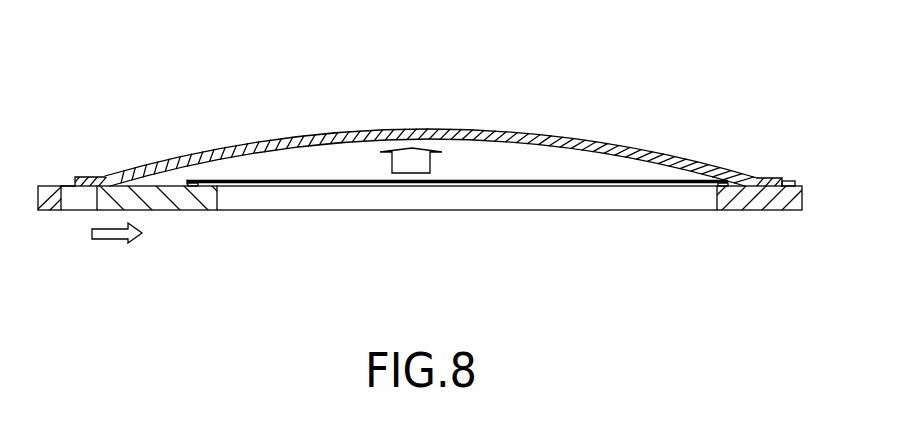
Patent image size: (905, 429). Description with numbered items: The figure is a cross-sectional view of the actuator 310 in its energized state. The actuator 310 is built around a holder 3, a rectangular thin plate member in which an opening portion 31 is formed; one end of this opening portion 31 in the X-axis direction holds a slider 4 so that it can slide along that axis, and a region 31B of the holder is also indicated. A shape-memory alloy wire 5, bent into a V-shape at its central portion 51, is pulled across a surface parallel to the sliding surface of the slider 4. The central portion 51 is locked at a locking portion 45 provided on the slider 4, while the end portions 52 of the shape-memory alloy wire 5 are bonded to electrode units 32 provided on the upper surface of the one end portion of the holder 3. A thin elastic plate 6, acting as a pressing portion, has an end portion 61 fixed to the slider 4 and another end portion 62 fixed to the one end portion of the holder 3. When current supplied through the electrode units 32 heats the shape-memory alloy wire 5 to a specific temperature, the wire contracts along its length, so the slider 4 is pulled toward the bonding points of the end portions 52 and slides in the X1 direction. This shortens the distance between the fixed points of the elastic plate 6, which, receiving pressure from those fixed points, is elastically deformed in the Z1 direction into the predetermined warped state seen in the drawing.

The actuator 310 is at (443, 62).
The elastic plate 6 is at (484, 130).
The upper surface of base plate 31B is at (68, 176).
The end portion of the elastic plate 61 is at (94, 177).
The central portion of the shape-memory alloy wire 51 is at (197, 180).
The shape-memory alloy wire 5 is at (530, 186).
The opening portion 31 is at (410, 211).
The holder 3 is at (48, 211).
The slider 4 is at (148, 211).
The locking portion 45 is at (196, 190).
The end portion of the shape-memory alloy wire 52 is at (723, 188).
The other end portion of the elastic plate 62 is at (763, 176).
The electrode unit 32 is at (788, 181).
The Z1 direction Z1 is at (430, 163).
The X1 direction X1 is at (117, 249).